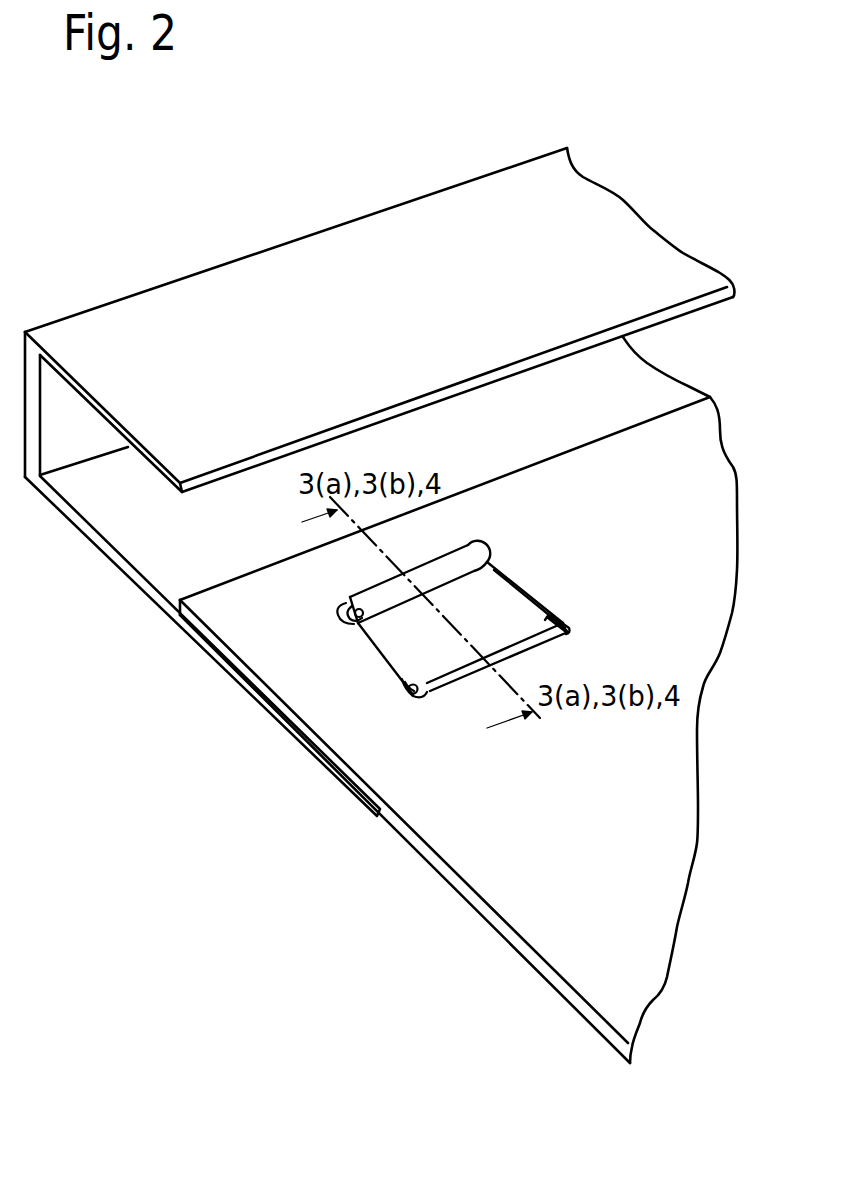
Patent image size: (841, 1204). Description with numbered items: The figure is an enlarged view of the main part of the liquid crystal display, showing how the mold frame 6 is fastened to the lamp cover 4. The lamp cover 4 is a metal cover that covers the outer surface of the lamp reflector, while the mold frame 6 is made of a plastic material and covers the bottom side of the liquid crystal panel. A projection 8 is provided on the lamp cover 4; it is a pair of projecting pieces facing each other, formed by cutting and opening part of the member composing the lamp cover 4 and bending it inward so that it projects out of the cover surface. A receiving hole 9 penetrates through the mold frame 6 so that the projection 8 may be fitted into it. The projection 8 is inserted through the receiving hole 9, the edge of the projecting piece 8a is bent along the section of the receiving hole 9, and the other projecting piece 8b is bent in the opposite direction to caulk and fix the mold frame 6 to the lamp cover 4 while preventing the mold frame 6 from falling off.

The lamp cover 4 is at (155, 378).
The mold frame 6 is at (560, 823).
The receiving hole 9 is at (477, 623).
The projection 8 is at (262, 694).
The projecting piece 8a is at (347, 603).
The projecting piece 8b is at (402, 679).